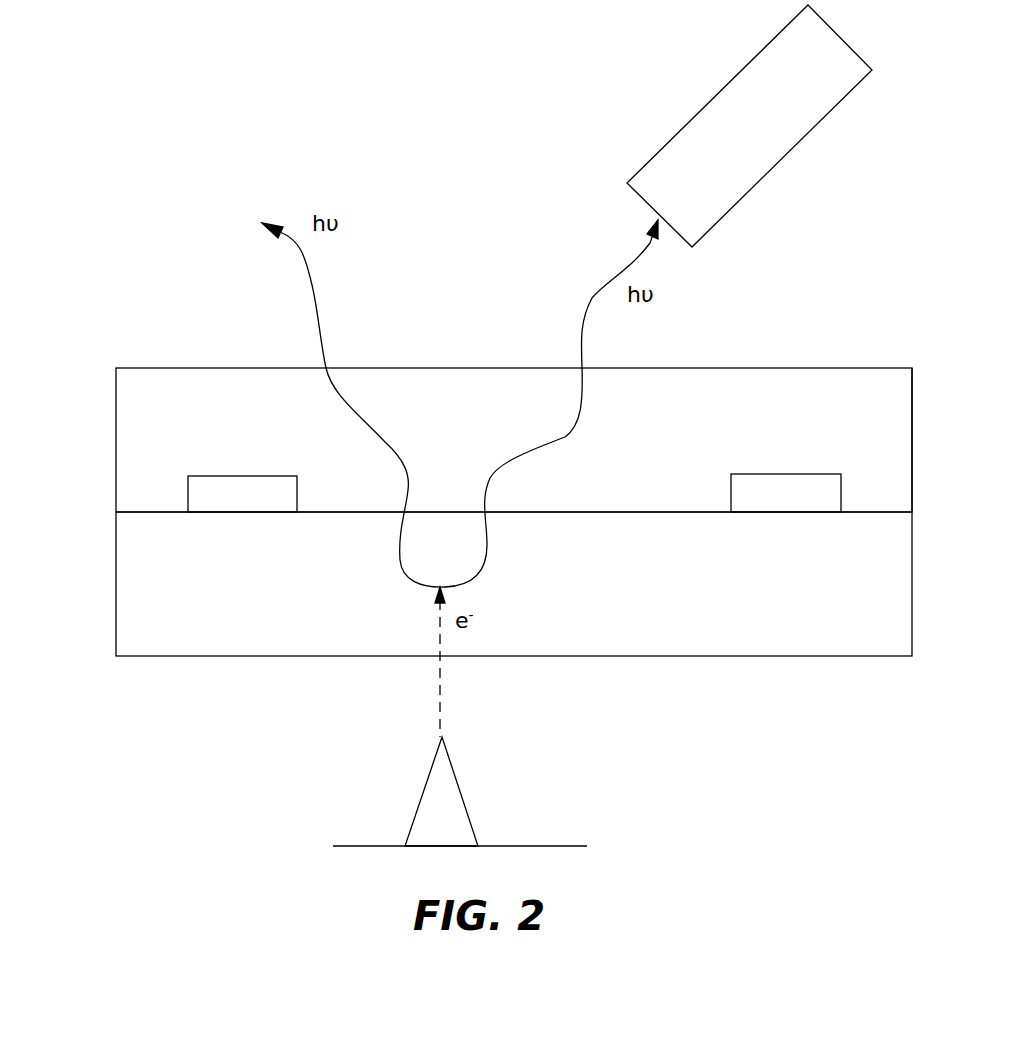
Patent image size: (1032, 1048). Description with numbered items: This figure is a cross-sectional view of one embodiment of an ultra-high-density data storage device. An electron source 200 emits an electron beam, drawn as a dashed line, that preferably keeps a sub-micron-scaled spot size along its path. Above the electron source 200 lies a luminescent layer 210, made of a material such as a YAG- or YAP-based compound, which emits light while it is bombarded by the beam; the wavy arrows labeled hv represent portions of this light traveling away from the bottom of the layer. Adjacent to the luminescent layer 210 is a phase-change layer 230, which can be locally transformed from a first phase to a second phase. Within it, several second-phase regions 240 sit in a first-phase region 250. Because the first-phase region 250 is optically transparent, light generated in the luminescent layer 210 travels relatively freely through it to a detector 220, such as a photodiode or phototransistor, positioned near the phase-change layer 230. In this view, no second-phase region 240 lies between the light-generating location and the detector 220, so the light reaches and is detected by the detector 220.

The electron source 200 is at (437, 823).
The luminescent layer 210 is at (260, 622).
The detector 220 is at (753, 157).
The phase-change layer 230 is at (858, 388).
The second-phase region 240 is at (242, 490).
The first-phase region 250 is at (143, 387).